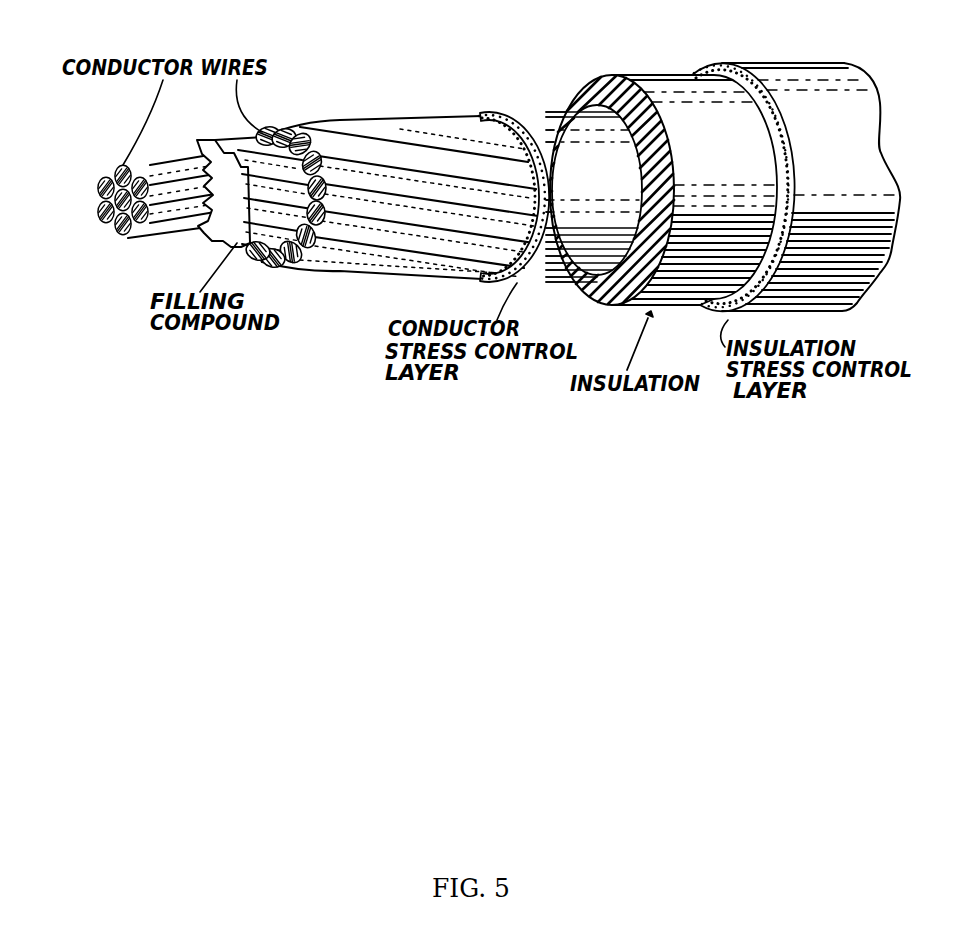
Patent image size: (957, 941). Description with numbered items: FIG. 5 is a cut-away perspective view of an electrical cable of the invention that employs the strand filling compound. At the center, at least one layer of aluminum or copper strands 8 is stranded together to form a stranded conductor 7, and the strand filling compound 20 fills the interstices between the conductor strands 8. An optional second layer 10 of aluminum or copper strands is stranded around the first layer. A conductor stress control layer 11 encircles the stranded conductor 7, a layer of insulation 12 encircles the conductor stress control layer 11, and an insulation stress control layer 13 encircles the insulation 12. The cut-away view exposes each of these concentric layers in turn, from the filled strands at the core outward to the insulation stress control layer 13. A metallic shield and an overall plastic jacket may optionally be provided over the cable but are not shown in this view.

The stranded conductor 7 is at (370, 110).
The aluminum or copper strands 8 is at (108, 163).
The second layer of aluminum or copper strands 10 is at (287, 128).
The conductor stress control layer 11 is at (533, 112).
The layer of insulation 12 is at (580, 75).
The insulation stress control layer 13 is at (743, 63).
The strand filling compound 20 is at (105, 210).